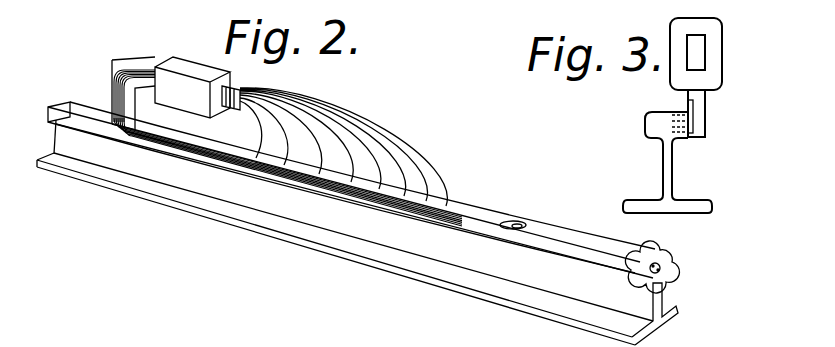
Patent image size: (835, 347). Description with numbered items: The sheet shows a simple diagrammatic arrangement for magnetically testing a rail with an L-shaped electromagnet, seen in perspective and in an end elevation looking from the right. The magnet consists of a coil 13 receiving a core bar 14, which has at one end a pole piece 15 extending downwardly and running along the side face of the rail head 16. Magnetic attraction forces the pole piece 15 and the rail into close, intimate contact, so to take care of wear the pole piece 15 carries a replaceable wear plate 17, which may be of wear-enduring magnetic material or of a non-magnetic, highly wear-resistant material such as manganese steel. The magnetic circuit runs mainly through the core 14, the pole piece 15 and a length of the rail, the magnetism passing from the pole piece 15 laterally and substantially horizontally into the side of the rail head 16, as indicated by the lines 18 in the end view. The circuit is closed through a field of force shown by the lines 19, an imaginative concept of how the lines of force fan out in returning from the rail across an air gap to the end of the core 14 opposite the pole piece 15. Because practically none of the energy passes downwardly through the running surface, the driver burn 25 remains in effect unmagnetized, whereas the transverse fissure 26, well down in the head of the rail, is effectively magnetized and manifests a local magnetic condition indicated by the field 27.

In FIG. 2, the coil 13 is at (185, 65).
In FIG. 3, the coil 13 is at (720, 58).
In FIG. 2, the core bar 14 is at (143, 72).
In FIG. 3, the core bar 14 is at (702, 66).
In FIG. 2, the pole piece 15 is at (112, 77).
In FIG. 3, the pole piece 15 is at (704, 125).
In FIG. 2, the rail head 16 is at (560, 235).
In FIG. 3, the rail head 16 is at (645, 125).
In FIG. 3, the replaceable wear plate 17 is at (693, 108).
In FIG. 3, the lines of magnetic force 18 is at (686, 132).
In FIG. 2, the field of force 19 is at (297, 118).
In FIG. 2, the driver burn 25 is at (520, 222).
In FIG. 2, the transverse fissure 26 is at (667, 277).
In FIG. 2, the field 27 is at (668, 257).